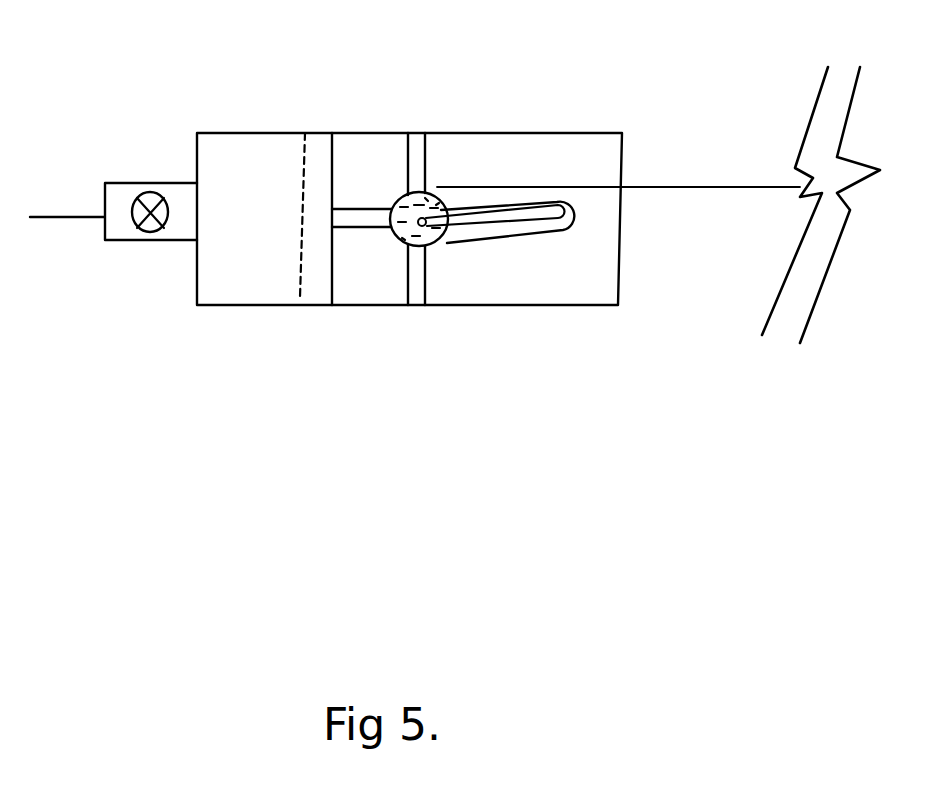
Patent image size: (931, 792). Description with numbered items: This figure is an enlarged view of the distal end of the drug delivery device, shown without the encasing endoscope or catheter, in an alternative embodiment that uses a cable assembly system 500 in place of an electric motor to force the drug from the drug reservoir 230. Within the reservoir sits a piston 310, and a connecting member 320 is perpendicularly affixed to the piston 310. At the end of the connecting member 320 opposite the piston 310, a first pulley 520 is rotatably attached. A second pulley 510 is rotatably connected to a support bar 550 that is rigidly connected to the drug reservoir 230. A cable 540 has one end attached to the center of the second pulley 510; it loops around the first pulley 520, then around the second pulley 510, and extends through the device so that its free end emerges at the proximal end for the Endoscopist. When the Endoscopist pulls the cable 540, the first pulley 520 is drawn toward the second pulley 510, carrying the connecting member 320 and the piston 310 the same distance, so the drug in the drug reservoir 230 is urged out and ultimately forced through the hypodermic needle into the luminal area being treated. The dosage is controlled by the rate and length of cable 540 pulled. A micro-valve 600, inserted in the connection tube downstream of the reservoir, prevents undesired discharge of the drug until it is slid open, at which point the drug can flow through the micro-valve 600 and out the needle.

The drug reservoir 230 is at (442, 133).
The piston 310 is at (320, 295).
The connecting member 320 is at (370, 209).
The cable assembly system 500 is at (510, 285).
The second pulley 510 is at (433, 193).
The first pulley 520 is at (577, 202).
The cable 540 is at (685, 187).
The support bar 550 is at (418, 305).
The micro-valve 600 is at (150, 232).